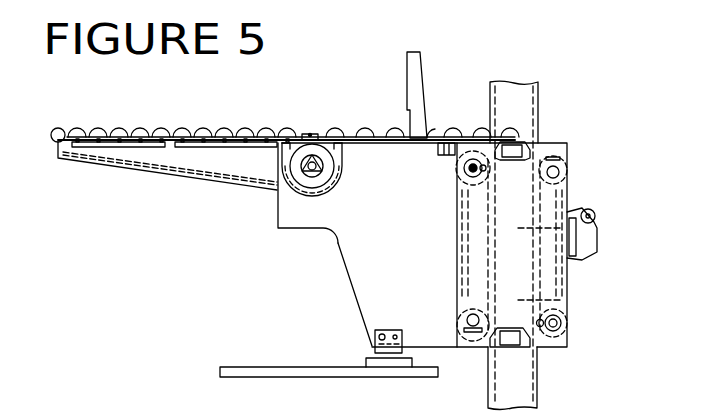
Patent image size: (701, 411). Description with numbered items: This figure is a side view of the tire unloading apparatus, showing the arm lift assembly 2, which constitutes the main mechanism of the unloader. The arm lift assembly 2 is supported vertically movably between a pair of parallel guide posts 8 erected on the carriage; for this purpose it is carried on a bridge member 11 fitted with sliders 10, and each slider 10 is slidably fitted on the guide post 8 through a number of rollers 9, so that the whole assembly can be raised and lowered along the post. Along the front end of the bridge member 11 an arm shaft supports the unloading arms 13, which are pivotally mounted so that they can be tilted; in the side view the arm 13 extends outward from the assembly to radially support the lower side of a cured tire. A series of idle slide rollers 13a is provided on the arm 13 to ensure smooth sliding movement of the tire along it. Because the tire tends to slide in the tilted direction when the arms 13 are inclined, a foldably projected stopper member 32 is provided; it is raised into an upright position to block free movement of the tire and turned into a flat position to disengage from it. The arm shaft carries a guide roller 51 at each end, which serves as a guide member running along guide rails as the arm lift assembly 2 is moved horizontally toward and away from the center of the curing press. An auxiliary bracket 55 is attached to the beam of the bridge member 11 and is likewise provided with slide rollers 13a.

The arm lift assembly 2 is at (328, 247).
The guide post 8 is at (540, 90).
The roller 9 is at (517, 148).
The slider 10 is at (569, 186).
The bridge member 11 is at (356, 274).
The unloading arm 13 is at (207, 160).
The idle slide roller 13a is at (201, 131).
The stopper member 32 is at (405, 83).
The guide roller 51 is at (322, 160).
The auxiliary bracket 55 is at (598, 232).